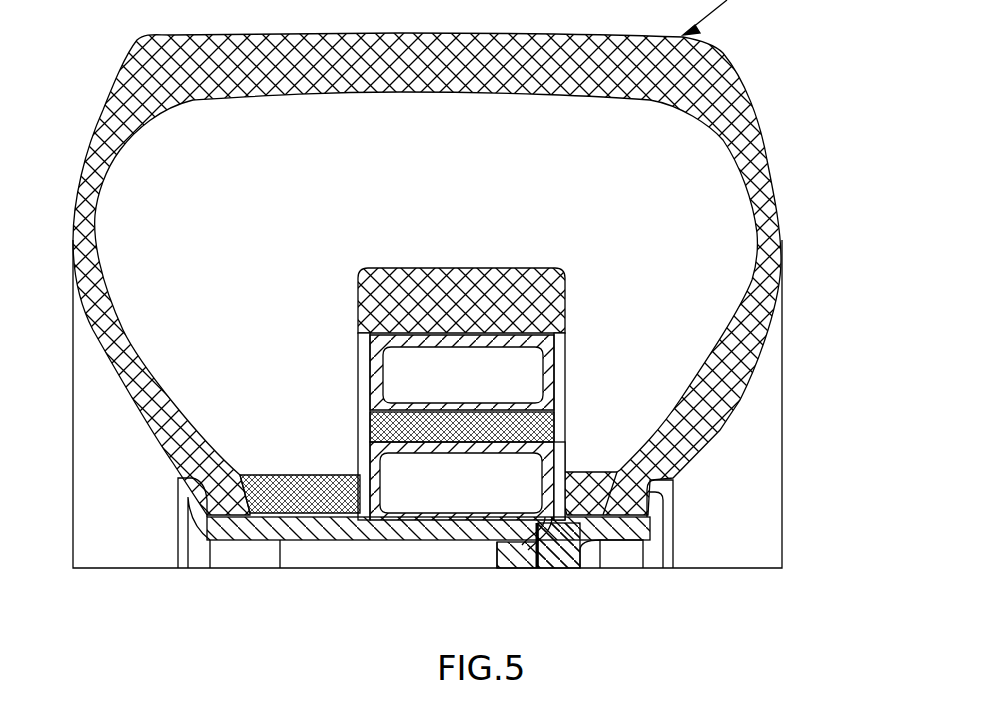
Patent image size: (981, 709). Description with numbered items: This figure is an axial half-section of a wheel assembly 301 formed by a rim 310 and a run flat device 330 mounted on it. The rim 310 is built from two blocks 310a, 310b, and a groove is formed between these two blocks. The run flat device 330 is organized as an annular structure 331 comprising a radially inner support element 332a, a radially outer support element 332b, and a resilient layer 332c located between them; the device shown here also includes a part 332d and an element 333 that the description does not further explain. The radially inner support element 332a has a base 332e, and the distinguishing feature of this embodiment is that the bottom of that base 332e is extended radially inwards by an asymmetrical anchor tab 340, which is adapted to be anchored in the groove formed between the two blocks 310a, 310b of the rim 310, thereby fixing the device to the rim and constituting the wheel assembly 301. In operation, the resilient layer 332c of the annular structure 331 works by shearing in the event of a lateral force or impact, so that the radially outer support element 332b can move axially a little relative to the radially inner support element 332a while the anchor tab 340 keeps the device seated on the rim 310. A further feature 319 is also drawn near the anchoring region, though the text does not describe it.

The wheel assembly 301 is at (775, 58).
The run flat device 330 is at (572, 205).
The annular structure 331 is at (570, 386).
The radially inner support element 332a is at (568, 438).
The radially outer support element 332b is at (567, 330).
The resilient layer 332c is at (373, 422).
The cap portion 332d is at (395, 280).
The base 332e is at (420, 510).
The sealing member 333 is at (288, 480).
The rim 310 is at (238, 543).
The block 310a is at (326, 541).
The block 310b is at (655, 522).
The asymmetrical anchor tab 340 is at (525, 547).
The hook portion 319 is at (543, 527).